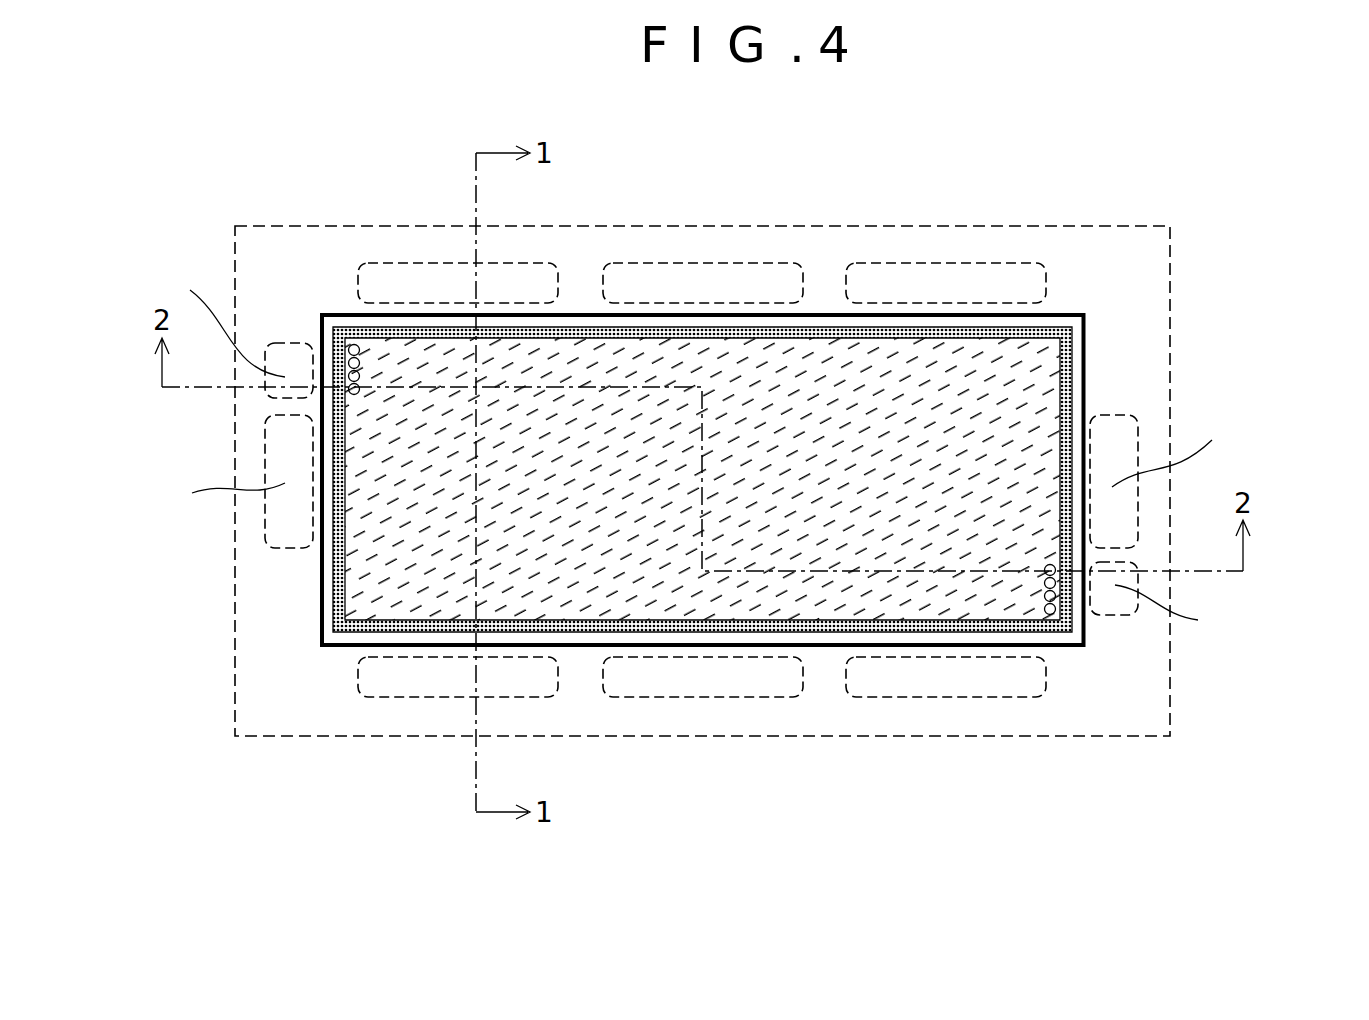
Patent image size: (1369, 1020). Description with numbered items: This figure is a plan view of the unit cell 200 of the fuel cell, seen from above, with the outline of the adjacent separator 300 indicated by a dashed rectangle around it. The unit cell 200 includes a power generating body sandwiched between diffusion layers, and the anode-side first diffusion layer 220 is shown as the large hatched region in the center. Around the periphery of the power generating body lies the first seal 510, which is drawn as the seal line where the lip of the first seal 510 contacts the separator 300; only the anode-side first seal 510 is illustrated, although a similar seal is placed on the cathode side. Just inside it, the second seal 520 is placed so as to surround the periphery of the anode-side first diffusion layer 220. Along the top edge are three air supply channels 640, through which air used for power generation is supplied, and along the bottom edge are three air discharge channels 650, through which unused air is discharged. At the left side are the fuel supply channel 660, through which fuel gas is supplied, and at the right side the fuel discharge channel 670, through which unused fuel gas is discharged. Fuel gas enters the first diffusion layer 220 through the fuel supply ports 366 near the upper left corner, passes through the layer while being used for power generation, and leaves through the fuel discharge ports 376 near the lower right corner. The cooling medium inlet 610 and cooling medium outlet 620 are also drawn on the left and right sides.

The unit cell 200 is at (390, 200).
The separator 300 is at (1112, 222).
The first seal 510 is at (1087, 337).
The second seal 520 is at (1066, 367).
The first diffusion layer 220 is at (998, 403).
The fuel supply ports 366 is at (350, 340).
The fuel discharge ports 376 is at (1058, 635).
The air supply channels 640 is at (513, 270).
The air discharge channels 650 is at (525, 690).
The fuel supply channel 660 is at (285, 357).
The fuel discharge channel 670 is at (1128, 600).
The cooling medium inlet manifold 610 is at (278, 443).
The cooling medium outlet manifold 620 is at (1128, 432).